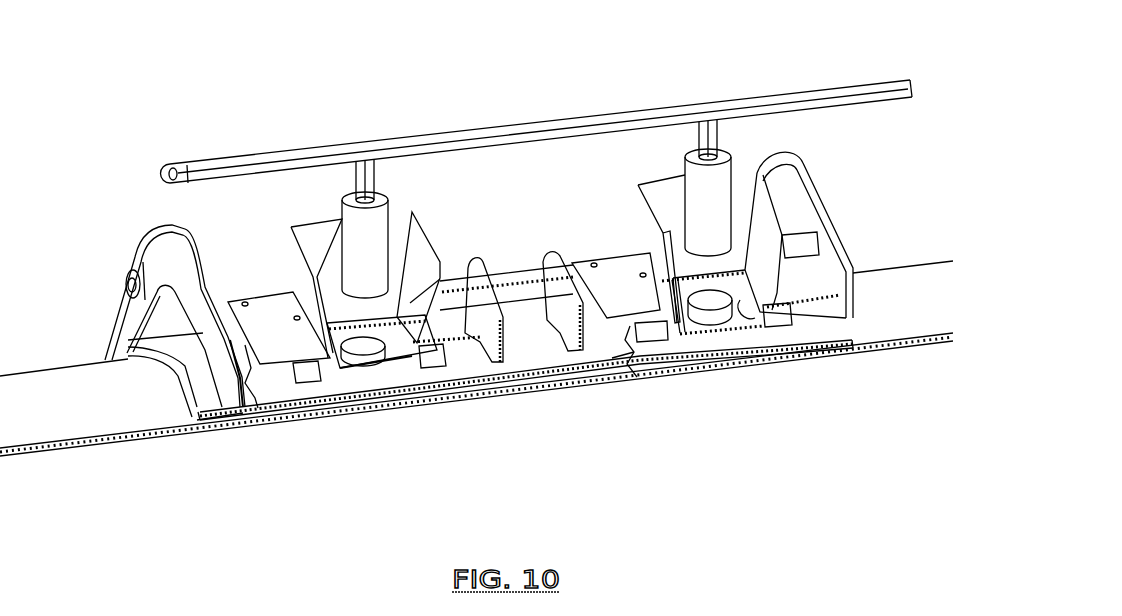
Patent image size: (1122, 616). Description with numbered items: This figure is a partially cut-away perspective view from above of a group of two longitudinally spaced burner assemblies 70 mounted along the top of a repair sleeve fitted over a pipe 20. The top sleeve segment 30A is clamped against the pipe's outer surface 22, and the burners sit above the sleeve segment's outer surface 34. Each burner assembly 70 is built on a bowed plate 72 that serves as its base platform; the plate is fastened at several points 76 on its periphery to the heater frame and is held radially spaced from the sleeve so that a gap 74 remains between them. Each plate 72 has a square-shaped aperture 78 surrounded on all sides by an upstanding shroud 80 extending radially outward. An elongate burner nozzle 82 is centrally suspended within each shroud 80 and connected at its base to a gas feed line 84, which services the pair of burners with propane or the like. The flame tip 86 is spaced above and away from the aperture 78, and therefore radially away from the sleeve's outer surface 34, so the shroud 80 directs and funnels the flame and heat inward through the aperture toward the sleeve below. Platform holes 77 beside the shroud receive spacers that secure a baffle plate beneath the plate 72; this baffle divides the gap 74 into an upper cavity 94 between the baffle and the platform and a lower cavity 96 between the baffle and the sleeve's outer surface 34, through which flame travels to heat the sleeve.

The pipe 20 is at (905, 345).
The outer surface of the pipe 22 is at (76, 416).
The top sleeve segment 30A is at (167, 377).
The outer surface of the sleeve segment 34 is at (200, 375).
The burner assembly 70 is at (405, 193).
The plate 72 is at (270, 316).
The gap 74 is at (225, 416).
The fastening points 76 is at (244, 300).
The platform holes 77 is at (296, 314).
The aperture 78 is at (755, 280).
The shroud 80 is at (767, 237).
The burner nozzle 82 is at (377, 266).
The gas feed line 84 is at (760, 95).
The flame tip 86 is at (712, 252).
The upper cavity 94 is at (620, 337).
The lower cavity 96 is at (617, 357).